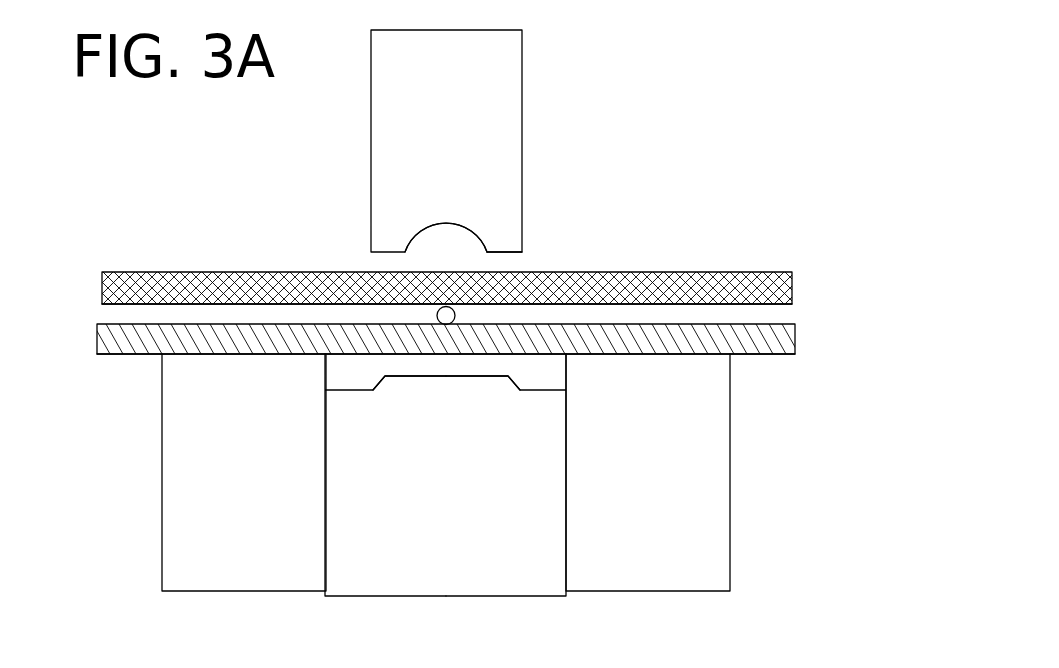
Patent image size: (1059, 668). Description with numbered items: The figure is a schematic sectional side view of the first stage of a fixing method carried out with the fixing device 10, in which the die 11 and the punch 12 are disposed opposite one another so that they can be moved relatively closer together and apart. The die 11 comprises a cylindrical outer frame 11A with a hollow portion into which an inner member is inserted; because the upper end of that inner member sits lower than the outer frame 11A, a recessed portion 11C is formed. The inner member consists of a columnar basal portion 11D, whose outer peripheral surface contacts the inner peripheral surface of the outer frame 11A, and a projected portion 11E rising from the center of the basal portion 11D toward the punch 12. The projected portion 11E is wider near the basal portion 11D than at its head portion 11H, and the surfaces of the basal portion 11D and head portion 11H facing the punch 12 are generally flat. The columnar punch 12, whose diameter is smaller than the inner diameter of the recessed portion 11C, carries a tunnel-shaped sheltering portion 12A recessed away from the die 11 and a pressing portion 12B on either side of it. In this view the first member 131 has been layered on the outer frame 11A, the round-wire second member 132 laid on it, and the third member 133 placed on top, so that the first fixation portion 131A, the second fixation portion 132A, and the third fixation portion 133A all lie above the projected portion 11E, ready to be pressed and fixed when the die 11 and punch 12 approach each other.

The fixing device 10 is at (665, 83).
The die 11 is at (791, 398).
The outer frame 11A is at (162, 440).
The recessed portion 11C is at (562, 372).
The basal portion 11D is at (550, 393).
The projected portion 11E is at (392, 390).
The head portion 11H is at (422, 378).
The punch 12 is at (522, 164).
The sheltering portion 12A is at (447, 224).
The pressing portion 12B is at (522, 252).
The first member 131 is at (97, 343).
The first fixation portion 131A is at (362, 354).
The second member 132 is at (477, 366).
The second fixation portion 132A is at (452, 322).
The third member 133 is at (158, 282).
The third fixation portion 133A is at (390, 283).